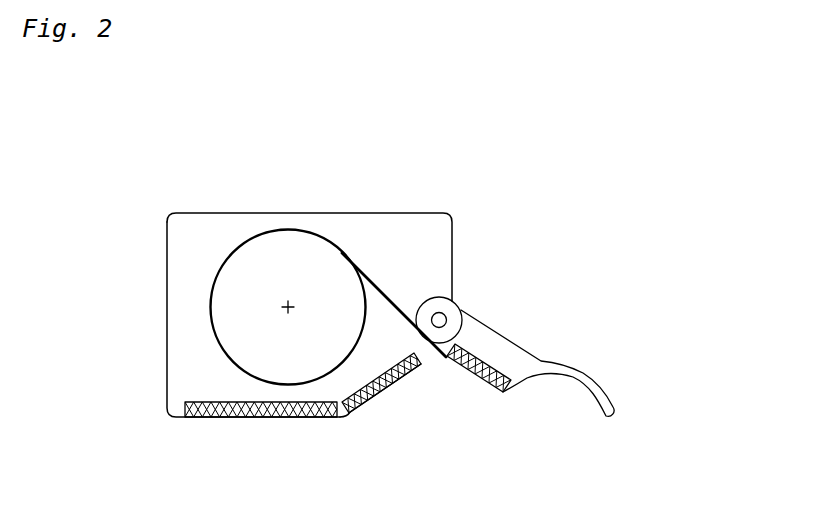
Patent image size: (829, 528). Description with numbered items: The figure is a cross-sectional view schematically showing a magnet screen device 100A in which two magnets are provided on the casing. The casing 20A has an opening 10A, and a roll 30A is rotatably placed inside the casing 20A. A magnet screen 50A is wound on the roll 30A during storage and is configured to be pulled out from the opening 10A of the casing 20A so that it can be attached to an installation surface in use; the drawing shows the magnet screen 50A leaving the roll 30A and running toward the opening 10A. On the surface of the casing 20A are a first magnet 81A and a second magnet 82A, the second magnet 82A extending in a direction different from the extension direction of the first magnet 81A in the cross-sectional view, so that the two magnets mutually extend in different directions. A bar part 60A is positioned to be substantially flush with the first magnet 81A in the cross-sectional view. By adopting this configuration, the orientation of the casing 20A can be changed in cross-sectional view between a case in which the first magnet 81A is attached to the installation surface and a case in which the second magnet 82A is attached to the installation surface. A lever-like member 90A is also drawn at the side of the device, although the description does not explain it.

The magnet screen device 100A is at (521, 180).
The opening 10A is at (426, 355).
The casing 20A is at (167, 293).
The roll 30A is at (240, 324).
The magnet screen 50A is at (378, 285).
The bar part 60A is at (463, 311).
The first magnet 81A is at (375, 402).
The second magnet 82A is at (248, 418).
The lever 90A is at (593, 387).